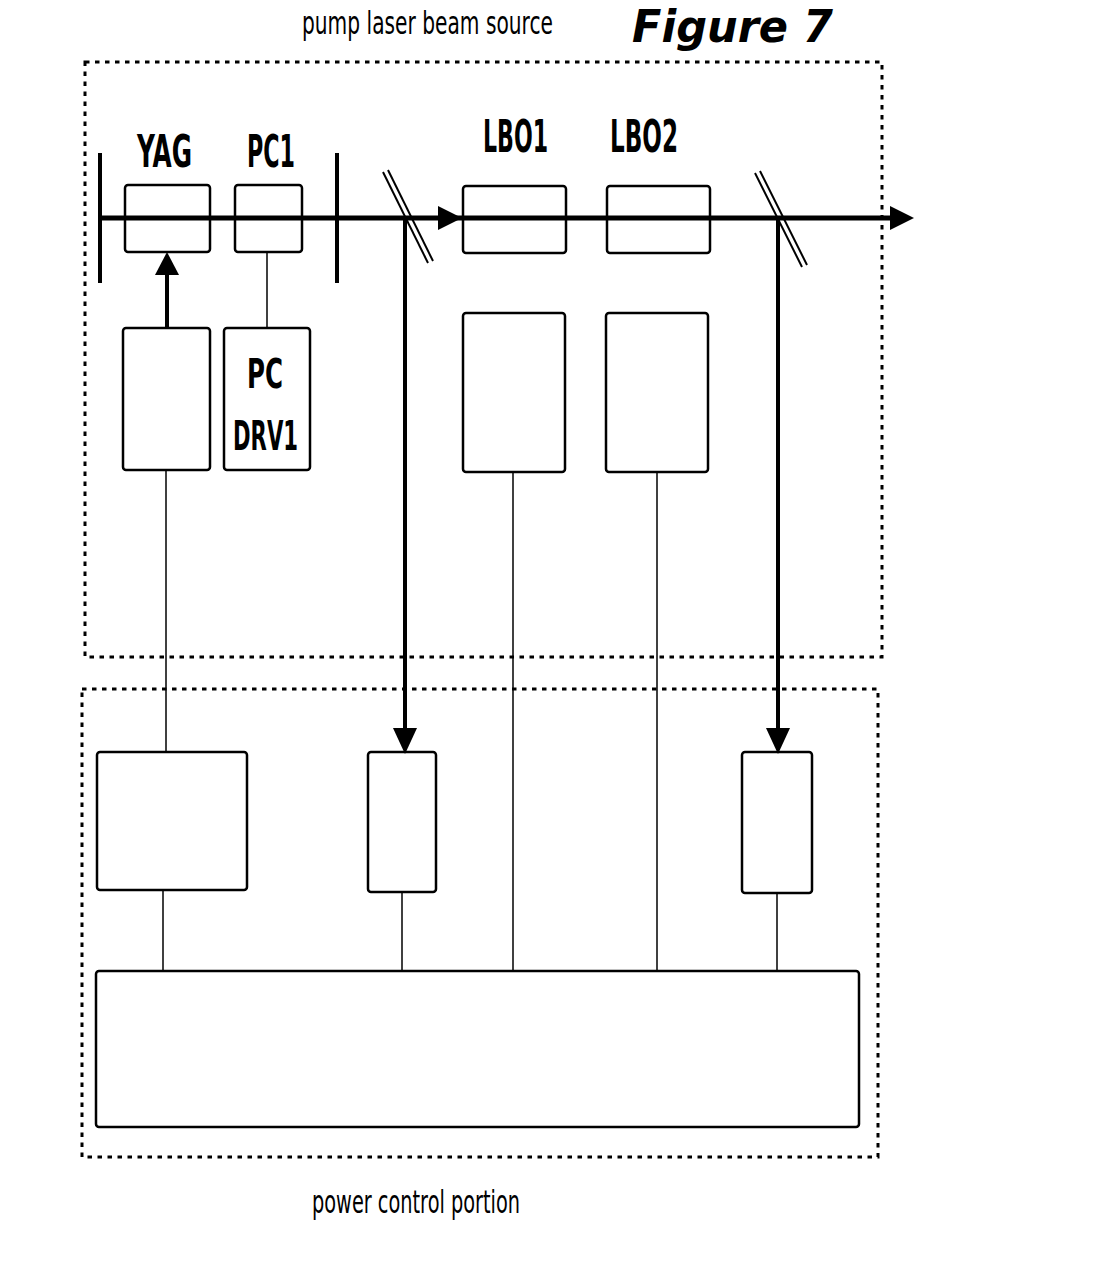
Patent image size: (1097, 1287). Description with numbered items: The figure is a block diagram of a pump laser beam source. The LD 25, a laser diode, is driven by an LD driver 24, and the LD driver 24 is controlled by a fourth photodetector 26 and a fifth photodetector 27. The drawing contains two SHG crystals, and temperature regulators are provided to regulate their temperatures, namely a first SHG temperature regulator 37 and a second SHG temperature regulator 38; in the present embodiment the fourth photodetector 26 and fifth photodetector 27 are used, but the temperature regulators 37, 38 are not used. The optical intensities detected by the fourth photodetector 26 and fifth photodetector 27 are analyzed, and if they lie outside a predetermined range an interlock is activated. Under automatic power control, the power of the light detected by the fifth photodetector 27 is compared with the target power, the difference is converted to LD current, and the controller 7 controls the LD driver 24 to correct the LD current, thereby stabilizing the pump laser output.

The controller 7 is at (538, 968).
The LD driver 24 is at (247, 825).
The LD (laser diode) 25 is at (142, 472).
The fourth photodetector 26 is at (367, 830).
The fifth photodetector 27 is at (740, 848).
The first SHG temperature regulator 37 is at (497, 473).
The second SHG temperature regulator 38 is at (633, 473).